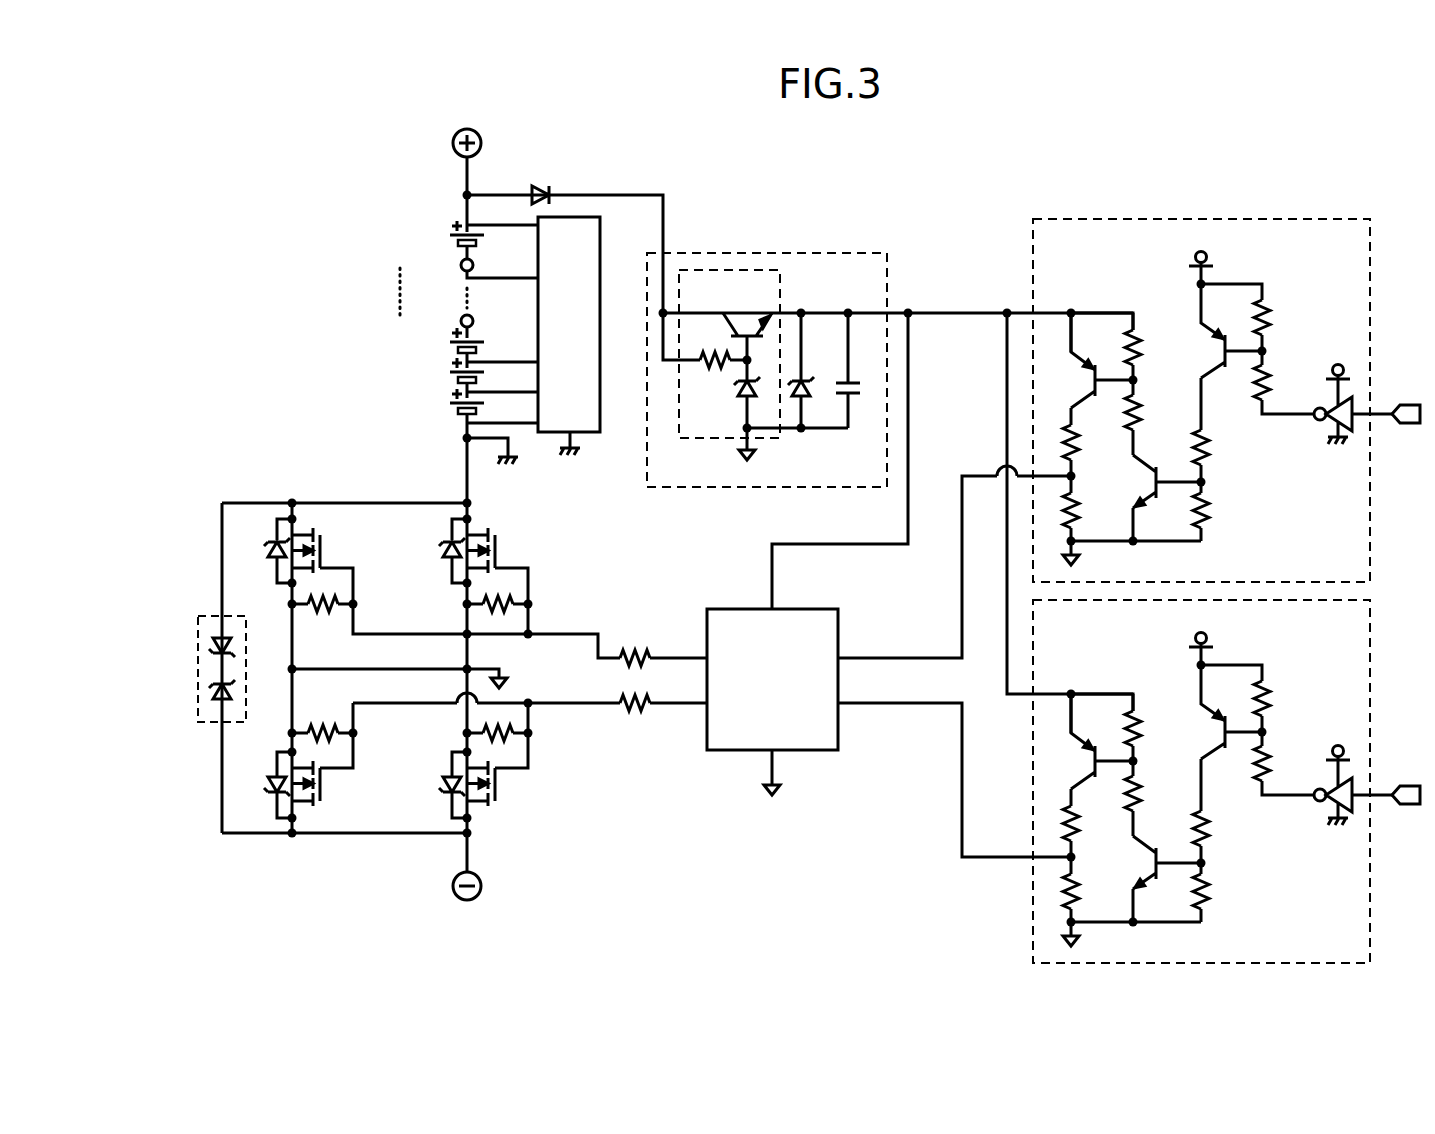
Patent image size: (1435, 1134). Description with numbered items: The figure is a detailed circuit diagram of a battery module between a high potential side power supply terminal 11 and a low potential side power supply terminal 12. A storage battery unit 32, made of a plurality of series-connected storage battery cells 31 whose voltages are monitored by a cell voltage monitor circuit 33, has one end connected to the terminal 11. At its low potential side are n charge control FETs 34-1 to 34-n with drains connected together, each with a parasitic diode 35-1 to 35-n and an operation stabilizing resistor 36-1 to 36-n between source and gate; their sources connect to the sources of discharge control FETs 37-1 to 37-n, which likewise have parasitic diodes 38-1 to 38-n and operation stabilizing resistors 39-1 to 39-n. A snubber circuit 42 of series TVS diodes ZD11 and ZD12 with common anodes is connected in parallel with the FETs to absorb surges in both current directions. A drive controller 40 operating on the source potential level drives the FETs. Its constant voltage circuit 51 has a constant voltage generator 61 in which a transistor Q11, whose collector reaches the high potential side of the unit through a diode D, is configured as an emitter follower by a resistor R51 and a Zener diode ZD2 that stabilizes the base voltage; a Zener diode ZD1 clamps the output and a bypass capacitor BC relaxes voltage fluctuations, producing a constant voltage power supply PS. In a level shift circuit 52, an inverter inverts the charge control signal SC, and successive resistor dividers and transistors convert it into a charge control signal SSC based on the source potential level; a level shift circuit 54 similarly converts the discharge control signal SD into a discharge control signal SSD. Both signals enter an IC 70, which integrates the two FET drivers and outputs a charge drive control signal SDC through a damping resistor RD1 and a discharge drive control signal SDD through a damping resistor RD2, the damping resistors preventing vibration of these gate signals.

The high potential side power supply terminal 11 is at (482, 139).
The low potential side power supply terminal 12 is at (482, 882).
The storage battery cell 31 is at (450, 408).
The storage battery unit 32 is at (390, 220).
The cell voltage monitor circuit 33 is at (601, 226).
The charge control FET 34-1 is at (322, 528).
The charge control FET 34-n is at (497, 528).
The diode 35-1 is at (272, 562).
The diode 35-n is at (442, 555).
The operation stabilizing resistor 36-1 is at (324, 612).
The operation stabilizing resistor 36-n is at (516, 598).
The discharge control FET 37-1 is at (324, 802).
The discharge control FET 37-n is at (498, 804).
The diode 38-1 is at (270, 780).
The diode 38-n is at (444, 784).
The operation stabilizing resistor 39-1 is at (330, 728).
The operation stabilizing resistor 39-n is at (518, 730).
The drive controller 40 is at (1018, 132).
The snubber circuit 42 is at (210, 616).
The constant voltage circuit 51 is at (842, 252).
The level shift circuit 52 is at (1372, 252).
The level shift circuit 54 is at (1228, 781).
The constant voltage generator 61 is at (781, 292).
The IC 70 is at (800, 609).
The diode D is at (549, 188).
The transistor Q11 is at (735, 322).
The resistor R51 is at (706, 372).
The Zener diode ZD1 is at (807, 396).
The Zener diode ZD2 is at (740, 396).
The bypass capacitor BC is at (842, 384).
The TVS diode ZD11 is at (212, 647).
The TVS diode ZD12 is at (212, 689).
The damping resistor RD1 is at (634, 646).
The damping resistor RD2 is at (634, 714).
The charge control signal SC is at (1408, 403).
The discharge control signal SD is at (1408, 773).
The constant voltage power supply PS is at (957, 310).
The charge control signal SSC is at (974, 474).
The discharge control signal SSD is at (974, 858).
The charge drive control signal SDC is at (682, 656).
The discharge drive control signal SDD is at (682, 708).